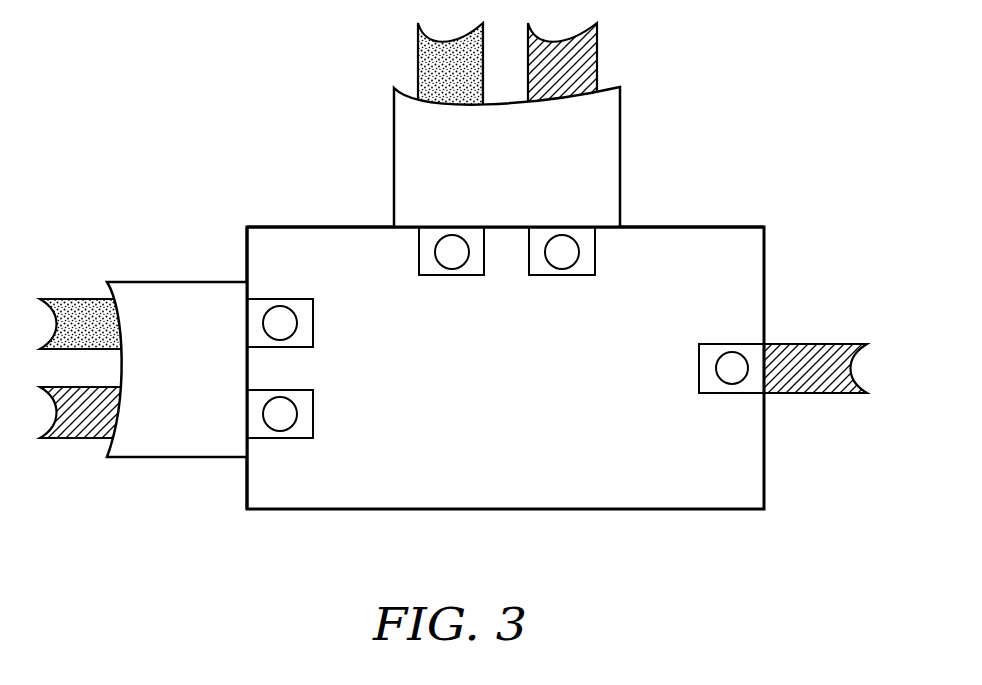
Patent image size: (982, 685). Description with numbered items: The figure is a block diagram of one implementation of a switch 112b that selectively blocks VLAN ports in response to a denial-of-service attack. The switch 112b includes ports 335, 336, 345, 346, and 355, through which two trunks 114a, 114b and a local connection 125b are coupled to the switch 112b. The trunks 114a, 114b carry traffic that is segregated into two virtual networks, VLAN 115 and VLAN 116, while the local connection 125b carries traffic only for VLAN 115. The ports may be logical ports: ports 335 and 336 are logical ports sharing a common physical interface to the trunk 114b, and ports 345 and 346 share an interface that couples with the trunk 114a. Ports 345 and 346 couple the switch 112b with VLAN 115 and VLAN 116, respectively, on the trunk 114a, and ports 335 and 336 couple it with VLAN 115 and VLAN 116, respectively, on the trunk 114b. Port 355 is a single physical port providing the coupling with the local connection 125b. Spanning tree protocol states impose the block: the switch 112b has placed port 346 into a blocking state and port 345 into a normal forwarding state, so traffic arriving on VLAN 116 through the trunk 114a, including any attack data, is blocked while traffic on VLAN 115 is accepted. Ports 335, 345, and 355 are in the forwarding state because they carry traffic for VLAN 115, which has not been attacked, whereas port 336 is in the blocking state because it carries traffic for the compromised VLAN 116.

The switch 112b is at (692, 510).
The trunk 114a is at (190, 457).
The trunk 114b is at (620, 137).
The VLAN 115 is at (597, 60).
The VLAN 116 is at (417, 70).
The local connection 125b is at (817, 393).
The port 335 is at (563, 275).
The port 336 is at (448, 275).
The port 345 is at (313, 413).
The port 346 is at (313, 332).
The port 355 is at (713, 393).